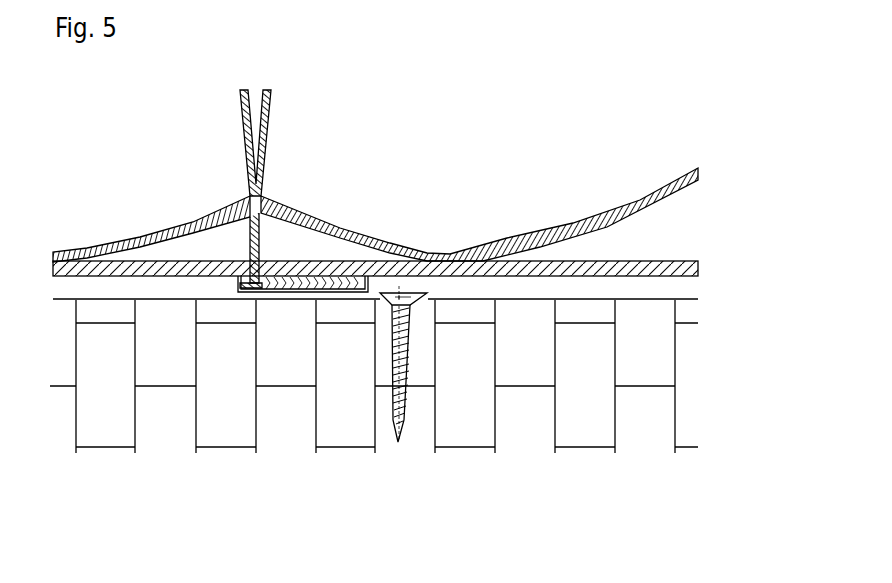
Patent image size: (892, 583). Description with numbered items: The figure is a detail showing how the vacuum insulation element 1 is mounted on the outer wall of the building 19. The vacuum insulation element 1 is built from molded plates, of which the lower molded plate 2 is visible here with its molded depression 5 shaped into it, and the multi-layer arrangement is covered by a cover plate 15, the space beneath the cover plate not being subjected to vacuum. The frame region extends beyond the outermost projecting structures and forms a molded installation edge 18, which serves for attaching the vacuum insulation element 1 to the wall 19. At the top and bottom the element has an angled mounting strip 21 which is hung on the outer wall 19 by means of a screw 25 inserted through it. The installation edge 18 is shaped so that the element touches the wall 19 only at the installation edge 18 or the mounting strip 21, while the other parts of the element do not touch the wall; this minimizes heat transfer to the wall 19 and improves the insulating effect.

The vacuum insulation element 1 is at (789, 204).
The molded plate 2 is at (193, 223).
The molded depression 5 is at (508, 237).
The cover plate 15 is at (642, 265).
The molded installation edge 18 is at (285, 272).
The outer wall of the building 19 is at (573, 413).
The angled mounting strip 21 is at (370, 295).
The screw 25 is at (390, 415).